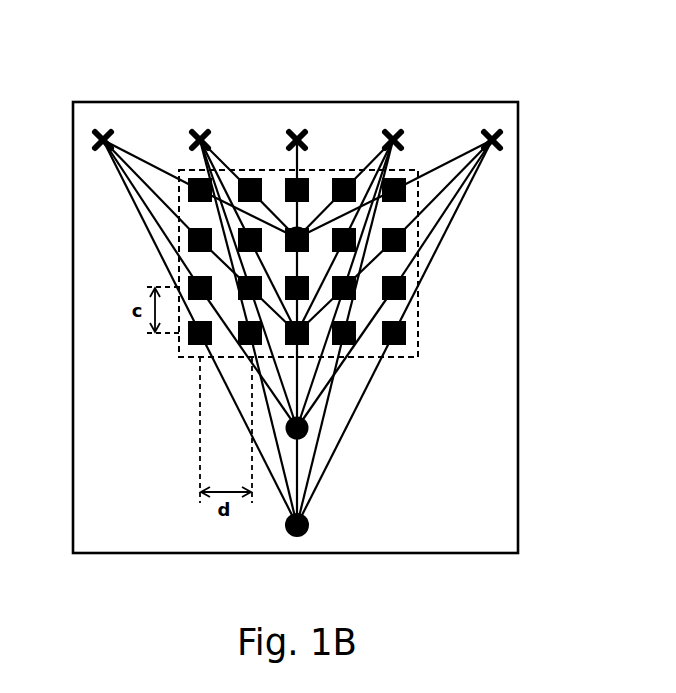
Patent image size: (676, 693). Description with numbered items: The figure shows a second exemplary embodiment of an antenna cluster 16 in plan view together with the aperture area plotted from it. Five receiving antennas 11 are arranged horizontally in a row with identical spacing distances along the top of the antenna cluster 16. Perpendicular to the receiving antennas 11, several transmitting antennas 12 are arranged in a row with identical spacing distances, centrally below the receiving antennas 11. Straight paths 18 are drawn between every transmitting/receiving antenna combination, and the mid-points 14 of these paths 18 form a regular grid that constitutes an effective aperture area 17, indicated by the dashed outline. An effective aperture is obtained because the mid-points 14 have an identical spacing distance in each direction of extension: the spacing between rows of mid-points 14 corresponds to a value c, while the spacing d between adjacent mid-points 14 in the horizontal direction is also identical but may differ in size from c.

The receiving antennas 11 is at (389, 130).
The transmitting antennas 12 is at (307, 433).
The mid-points 14 is at (405, 345).
The antenna cluster 16 is at (500, 100).
The effective aperture area 17 is at (418, 315).
The paths 18 is at (362, 408).